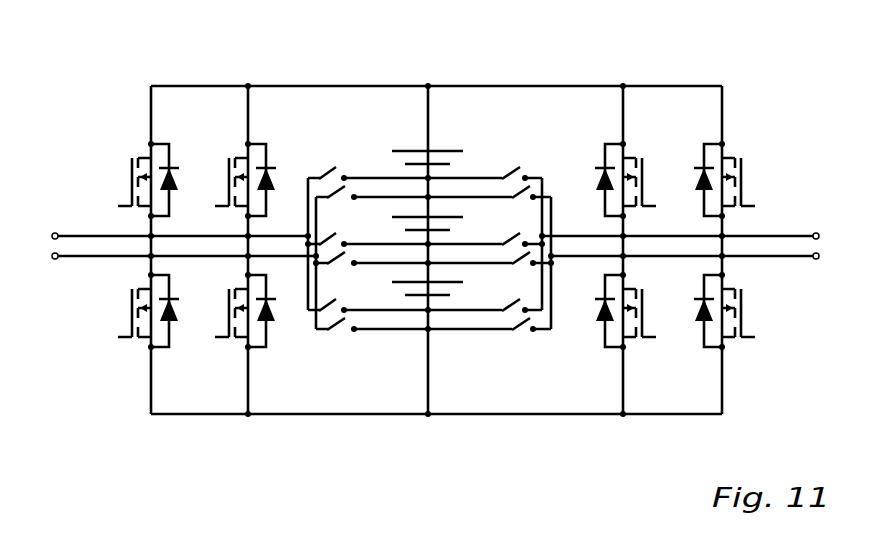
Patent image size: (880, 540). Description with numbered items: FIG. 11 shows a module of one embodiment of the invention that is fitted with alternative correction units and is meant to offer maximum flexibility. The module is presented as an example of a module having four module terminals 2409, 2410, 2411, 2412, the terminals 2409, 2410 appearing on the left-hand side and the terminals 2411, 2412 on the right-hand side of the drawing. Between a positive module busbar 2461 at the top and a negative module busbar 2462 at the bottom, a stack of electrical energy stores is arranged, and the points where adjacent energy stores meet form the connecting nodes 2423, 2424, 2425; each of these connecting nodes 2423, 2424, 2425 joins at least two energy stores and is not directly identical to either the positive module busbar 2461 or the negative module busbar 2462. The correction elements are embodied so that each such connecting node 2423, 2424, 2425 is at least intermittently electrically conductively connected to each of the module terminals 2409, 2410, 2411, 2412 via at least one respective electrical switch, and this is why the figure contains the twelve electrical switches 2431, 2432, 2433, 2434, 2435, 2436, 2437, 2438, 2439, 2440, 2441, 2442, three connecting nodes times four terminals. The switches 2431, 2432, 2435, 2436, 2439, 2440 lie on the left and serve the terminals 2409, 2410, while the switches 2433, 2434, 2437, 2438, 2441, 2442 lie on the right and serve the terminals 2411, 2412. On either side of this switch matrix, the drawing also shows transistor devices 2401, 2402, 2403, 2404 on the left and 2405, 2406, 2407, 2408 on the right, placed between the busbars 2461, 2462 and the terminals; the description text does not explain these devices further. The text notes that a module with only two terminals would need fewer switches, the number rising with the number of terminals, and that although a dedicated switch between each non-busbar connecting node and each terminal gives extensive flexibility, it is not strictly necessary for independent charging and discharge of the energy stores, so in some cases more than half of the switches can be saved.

The switch element 2401 is at (125, 160).
The switching transistor 2402 is at (127, 327).
The switching transistor 2403 is at (220, 158).
The switching transistor 2404 is at (222, 318).
The switching transistor 2405 is at (652, 160).
The switching transistor 2406 is at (652, 334).
The switching transistor 2407 is at (748, 160).
The switching transistor 2408 is at (748, 328).
The module terminal 2409 is at (67, 228).
The module terminal 2410 is at (75, 259).
The module terminal 2411 is at (805, 232).
The module terminal 2412 is at (800, 260).
The connecting node 2423 is at (419, 178).
The connecting node 2424 is at (412, 248).
The connecting node 2425 is at (410, 315).
The electrical switch 2431 is at (322, 162).
The electrical switch 2432 is at (338, 170).
The electrical switch 2433 is at (508, 170).
The electrical switch 2434 is at (518, 185).
The electrical switch 2435 is at (305, 236).
The electrical switch 2436 is at (340, 263).
The electrical switch 2437 is at (552, 186).
The electrical switch 2438 is at (500, 298).
The electrical switch 2439 is at (327, 317).
The electrical switch 2440 is at (337, 332).
The electrical switch 2441 is at (521, 330).
The electrical switch 2442 is at (518, 332).
The positive module busbar 2461 is at (562, 84).
The negative module busbar 2462 is at (578, 420).